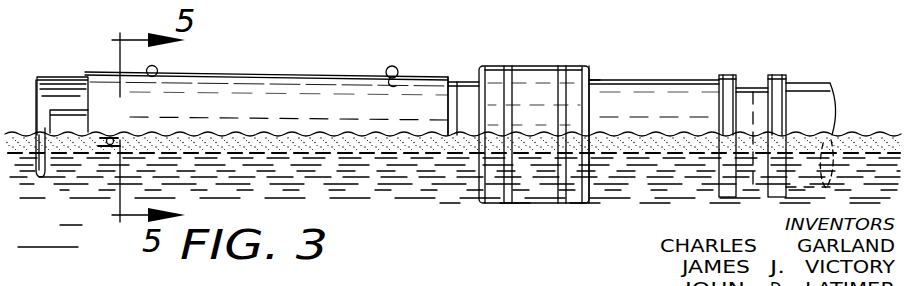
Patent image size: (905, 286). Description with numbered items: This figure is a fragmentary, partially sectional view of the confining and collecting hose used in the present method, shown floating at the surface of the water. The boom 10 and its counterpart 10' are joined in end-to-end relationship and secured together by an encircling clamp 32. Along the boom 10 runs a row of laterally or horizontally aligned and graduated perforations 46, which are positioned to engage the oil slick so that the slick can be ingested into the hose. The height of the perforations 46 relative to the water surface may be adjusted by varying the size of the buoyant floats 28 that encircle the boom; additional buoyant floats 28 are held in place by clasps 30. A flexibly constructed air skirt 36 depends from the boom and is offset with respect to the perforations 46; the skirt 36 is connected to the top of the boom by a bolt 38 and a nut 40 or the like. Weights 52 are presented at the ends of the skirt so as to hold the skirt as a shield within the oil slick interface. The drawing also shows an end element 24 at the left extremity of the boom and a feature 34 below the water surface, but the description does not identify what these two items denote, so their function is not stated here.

The boom 10 is at (426, 110).
The counterpart boom 10' is at (835, 110).
The end closure cap 24 is at (24, 132).
The buoyant floats 28 is at (581, 66).
The clasps 30 is at (505, 71).
The encircling clamp 32 is at (728, 74).
The sea bottom 34 is at (60, 223).
The air skirt 36 is at (425, 88).
The bolt 38 is at (399, 71).
The nut 40 is at (150, 77).
The perforations 46 is at (208, 133).
The weights 52 is at (110, 146).